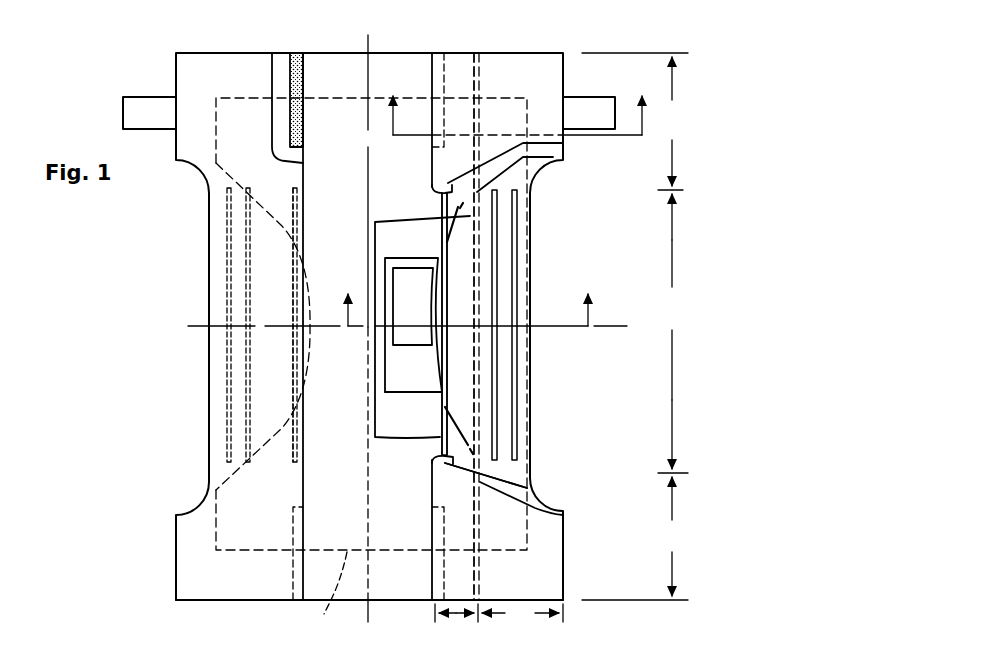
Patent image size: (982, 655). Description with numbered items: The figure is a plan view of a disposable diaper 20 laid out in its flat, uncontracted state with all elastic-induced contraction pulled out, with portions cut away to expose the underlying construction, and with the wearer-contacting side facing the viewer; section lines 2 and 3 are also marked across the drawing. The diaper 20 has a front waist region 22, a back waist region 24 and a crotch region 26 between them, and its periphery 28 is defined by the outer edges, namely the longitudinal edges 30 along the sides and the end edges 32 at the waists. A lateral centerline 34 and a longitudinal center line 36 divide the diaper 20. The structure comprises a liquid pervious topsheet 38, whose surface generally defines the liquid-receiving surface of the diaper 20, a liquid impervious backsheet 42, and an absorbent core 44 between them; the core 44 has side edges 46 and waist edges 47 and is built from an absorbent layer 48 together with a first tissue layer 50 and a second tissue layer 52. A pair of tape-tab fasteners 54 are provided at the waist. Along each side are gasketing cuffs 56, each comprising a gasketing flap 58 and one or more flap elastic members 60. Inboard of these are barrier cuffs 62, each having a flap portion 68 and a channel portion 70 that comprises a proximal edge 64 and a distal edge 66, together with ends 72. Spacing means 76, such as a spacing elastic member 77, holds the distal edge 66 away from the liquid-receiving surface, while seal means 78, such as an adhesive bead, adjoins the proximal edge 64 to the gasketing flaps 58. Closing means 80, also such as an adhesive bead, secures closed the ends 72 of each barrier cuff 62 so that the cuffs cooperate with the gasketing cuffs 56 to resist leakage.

The diaper 20 is at (138, 274).
The front waist region 22 is at (635, 538).
The back waist region 24 is at (635, 121).
The crotch region 26 is at (673, 333).
The periphery 28 is at (214, 603).
The longitudinal edges 30 is at (209, 479).
The end edges 32 is at (480, 52).
The lateral centerline 34 is at (188, 326).
The longitudinal center line 36 is at (368, 612).
The topsheet 38 is at (422, 345).
The backsheet 42 is at (531, 478).
The absorbent core 44 is at (512, 476).
The side edges 46 is at (522, 170).
The waist edges 47 is at (328, 594).
The absorbent layer 48 is at (413, 325).
The first tissue layer 50 is at (413, 409).
The second tissue layer 52 is at (413, 306).
The tape-tab fasteners 54 is at (369, 113).
The gasketing cuffs 56 is at (236, 277).
The gasketing flap 58 is at (523, 250).
The flap elastic members 60 is at (519, 233).
The barrier cuffs 62 is at (290, 437).
The proximal edge 64 is at (474, 93).
The distal edge 66 is at (430, 70).
The flap portion 68 is at (522, 614).
The channel portion 70 is at (456, 615).
The ends 72 is at (271, 72).
The spacing means 76 is at (290, 281).
The spacing elastic member 77 is at (443, 375).
The seal means 78 is at (478, 358).
The closing means 80 is at (296, 56).
The section line 2- 2 is at (466, 297).
The section line 3- 3 is at (516, 100).